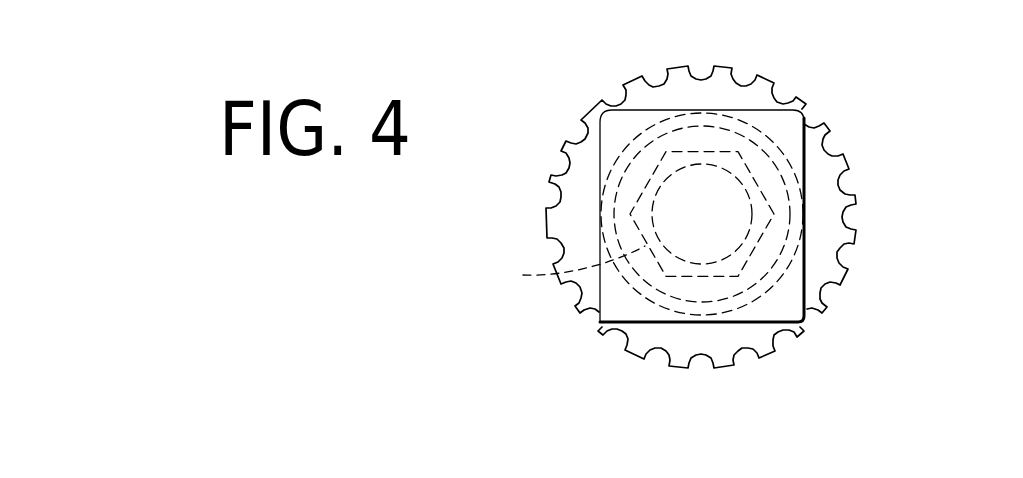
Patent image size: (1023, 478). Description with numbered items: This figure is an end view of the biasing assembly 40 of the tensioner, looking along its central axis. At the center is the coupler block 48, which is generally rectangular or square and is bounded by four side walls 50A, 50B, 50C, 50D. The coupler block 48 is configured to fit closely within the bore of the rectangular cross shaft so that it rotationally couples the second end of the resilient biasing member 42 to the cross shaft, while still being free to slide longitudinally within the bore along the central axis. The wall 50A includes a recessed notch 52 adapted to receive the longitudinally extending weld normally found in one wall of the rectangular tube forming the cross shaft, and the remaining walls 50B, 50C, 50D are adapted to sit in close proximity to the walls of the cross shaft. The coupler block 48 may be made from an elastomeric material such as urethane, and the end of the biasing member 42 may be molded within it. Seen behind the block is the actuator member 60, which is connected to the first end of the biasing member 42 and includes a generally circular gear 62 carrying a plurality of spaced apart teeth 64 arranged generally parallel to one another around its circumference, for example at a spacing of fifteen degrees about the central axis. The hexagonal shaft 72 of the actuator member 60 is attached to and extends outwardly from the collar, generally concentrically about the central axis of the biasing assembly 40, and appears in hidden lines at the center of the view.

The biasing assembly 40 is at (916, 52).
The resilient biasing member 42 is at (806, 151).
The coupler block 48 is at (590, 102).
The side wall 50A is at (600, 184).
The side wall 50B is at (730, 118).
The side wall 50C is at (847, 265).
The side wall 50D is at (743, 324).
The recessed notch 52 is at (583, 150).
The actuator member 60 is at (663, 62).
The gear 62 is at (820, 182).
The teeth 64 is at (856, 237).
The hexagonal shaft 72 is at (564, 267).